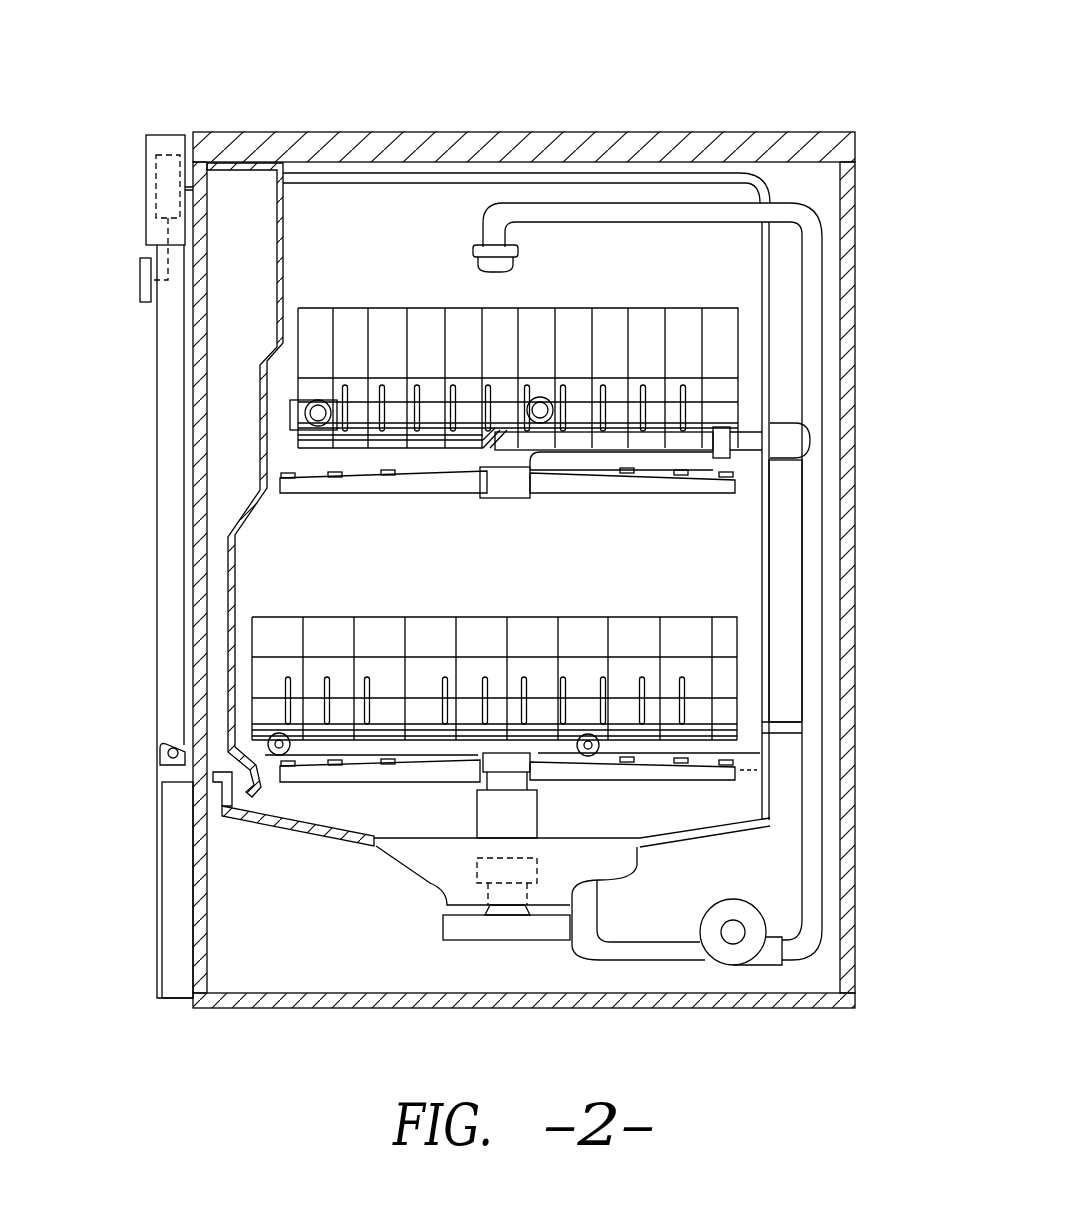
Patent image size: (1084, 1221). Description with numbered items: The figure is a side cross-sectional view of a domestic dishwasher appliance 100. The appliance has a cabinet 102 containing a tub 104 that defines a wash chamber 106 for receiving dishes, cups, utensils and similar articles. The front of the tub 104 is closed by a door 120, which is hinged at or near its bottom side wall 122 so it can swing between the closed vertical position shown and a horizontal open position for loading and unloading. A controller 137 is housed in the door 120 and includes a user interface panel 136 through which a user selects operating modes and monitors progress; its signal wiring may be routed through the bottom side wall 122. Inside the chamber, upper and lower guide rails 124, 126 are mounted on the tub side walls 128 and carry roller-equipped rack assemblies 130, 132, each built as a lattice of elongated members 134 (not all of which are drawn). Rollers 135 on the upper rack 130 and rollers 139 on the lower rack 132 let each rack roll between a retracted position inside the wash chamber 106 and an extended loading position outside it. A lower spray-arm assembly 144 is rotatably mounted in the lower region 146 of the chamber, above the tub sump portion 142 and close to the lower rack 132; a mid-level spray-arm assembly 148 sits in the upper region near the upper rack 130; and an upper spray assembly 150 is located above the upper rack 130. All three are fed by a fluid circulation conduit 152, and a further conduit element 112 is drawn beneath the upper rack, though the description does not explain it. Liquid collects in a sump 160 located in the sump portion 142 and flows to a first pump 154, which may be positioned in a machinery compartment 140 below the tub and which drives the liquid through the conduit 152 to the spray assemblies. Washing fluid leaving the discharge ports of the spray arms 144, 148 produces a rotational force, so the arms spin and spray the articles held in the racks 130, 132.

The dishwasher appliance 100 is at (703, 92).
The cabinet 102 is at (857, 190).
The tub 104 is at (378, 583).
The wash chamber 106 is at (268, 553).
The fluid conduit to spray arm 112 is at (670, 445).
The door 120 is at (157, 620).
The bottom side wall 122 is at (170, 760).
The upper guide rail 124 is at (295, 405).
The lower guide rail 126 is at (240, 797).
The tub side walls 128 is at (380, 210).
The upper rack assembly 130 is at (357, 293).
The lower rack assembly 132 is at (592, 617).
The elongated members 134 is at (393, 375).
The rollers 135 is at (297, 432).
The user interface panel 136 is at (140, 282).
The controller 137 is at (155, 183).
The rollers 139 is at (575, 758).
The machinery compartment 140 is at (333, 968).
The tub sump portion 142 is at (823, 868).
The lower spray-arm assembly 144 is at (357, 772).
The lower region 146 is at (742, 745).
The mid-level spray-arm assembly 148 is at (548, 483).
The upper spray assembly 150 is at (518, 270).
The fluid circulation conduit 152 is at (823, 547).
The first pump 154 is at (733, 905).
The sump 160 is at (428, 884).